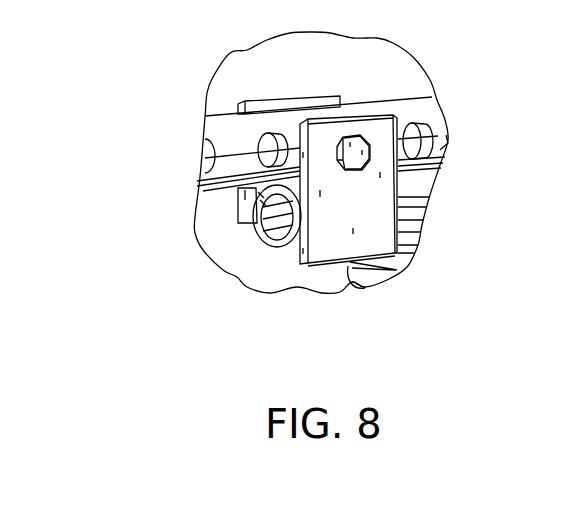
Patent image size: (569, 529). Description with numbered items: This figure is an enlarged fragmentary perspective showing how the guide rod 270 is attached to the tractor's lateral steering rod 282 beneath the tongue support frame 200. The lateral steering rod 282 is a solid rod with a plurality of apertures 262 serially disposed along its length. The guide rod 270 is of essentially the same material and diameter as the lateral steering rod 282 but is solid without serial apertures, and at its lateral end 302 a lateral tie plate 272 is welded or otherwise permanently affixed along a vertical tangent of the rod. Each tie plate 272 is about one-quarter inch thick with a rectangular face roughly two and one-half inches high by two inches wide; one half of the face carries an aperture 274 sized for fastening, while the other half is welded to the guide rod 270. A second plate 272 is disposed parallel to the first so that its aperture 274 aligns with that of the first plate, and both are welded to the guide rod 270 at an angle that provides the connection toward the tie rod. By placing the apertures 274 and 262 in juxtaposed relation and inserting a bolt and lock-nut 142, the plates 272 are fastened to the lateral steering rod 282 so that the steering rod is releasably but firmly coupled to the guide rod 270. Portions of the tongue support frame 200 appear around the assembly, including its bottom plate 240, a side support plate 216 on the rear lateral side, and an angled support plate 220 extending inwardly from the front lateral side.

The bolt and lock-nut 142 is at (370, 152).
The tongue support frame 200 is at (414, 23).
The side support plate 216 is at (413, 0).
The angled support plate 220 is at (567, 0).
The bottom plate 240 is at (456, 6).
The apertures 262 is at (448, 143).
The guide rod 270 is at (298, 258).
The lateral tie plate 272 is at (263, 103).
The aperture 274 is at (337, 141).
The lateral steering rod 282 is at (217, 128).
The lateral end 302 is at (365, 287).